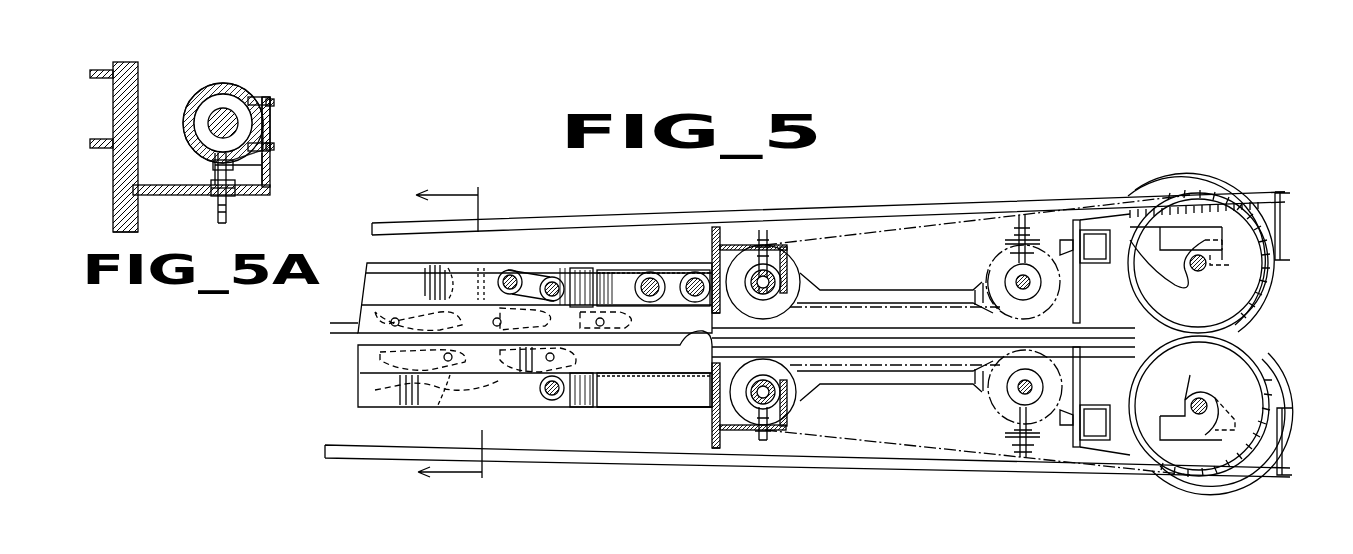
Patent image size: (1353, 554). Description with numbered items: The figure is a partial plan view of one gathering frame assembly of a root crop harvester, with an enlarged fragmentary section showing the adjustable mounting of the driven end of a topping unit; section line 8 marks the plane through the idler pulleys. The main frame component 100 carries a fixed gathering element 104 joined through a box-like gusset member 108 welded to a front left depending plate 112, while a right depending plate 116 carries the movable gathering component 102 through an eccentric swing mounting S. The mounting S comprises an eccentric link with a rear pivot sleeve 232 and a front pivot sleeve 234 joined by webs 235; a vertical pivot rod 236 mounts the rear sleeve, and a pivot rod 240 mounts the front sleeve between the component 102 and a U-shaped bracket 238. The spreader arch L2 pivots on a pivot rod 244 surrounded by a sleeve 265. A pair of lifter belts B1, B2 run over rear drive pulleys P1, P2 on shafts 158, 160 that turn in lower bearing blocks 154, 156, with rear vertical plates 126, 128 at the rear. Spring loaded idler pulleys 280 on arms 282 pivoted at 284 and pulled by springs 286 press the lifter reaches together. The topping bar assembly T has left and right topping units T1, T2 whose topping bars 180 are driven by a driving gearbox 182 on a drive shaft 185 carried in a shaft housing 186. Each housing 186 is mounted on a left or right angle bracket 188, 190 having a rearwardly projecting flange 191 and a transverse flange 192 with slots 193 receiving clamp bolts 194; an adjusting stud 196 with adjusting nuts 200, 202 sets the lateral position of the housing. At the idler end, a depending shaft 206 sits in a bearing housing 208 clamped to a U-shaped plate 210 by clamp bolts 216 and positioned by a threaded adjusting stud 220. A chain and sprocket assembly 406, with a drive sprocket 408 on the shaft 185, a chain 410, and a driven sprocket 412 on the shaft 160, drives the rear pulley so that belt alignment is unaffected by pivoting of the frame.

In FIG. 5, the section line 8- 8 is at (449, 336).
In FIG. 5, the main frame component 100 is at (677, 430).
In FIG. 5, the movable gathering component 102 is at (390, 256).
In FIG. 5, the fixed gathering element 104 is at (357, 422).
In FIG. 5A, the box-like gusset member 108 is at (96, 70).
In FIG. 5, the box-like gusset member 108 is at (607, 409).
In FIG. 5A, the front left depending plate 112 is at (128, 231).
In FIG. 5, the front left depending plate 112 is at (716, 450).
In FIG. 5, the right front depending plate 116 is at (714, 230).
In FIG. 5, the rear vertical plate 126 is at (1284, 430).
In FIG. 5, the rear vertical plate 128 is at (1282, 220).
In FIG. 5, the lower bearing block 154 is at (1199, 387).
In FIG. 5, the lower bearing block 156 is at (1208, 276).
In FIG. 5, the pulley shaft 158 is at (1192, 393).
In FIG. 5, the pulley drive shaft 160 is at (1190, 265).
In FIG. 5, the topping bars 180 is at (941, 306).
In FIG. 5, the driving gearbox 182 is at (810, 286).
In FIG. 5A, the drive shaft 185 is at (211, 122).
In FIG. 5A, the shaft housing 186 is at (208, 96).
In FIG. 5, the shaft housing 186 is at (788, 252).
In FIG. 5A, the left angle bracket 188 is at (288, 129).
In FIG. 5, the left angle bracket 188 is at (808, 416).
In FIG. 5, the right angle bracket 190 is at (806, 262).
In FIG. 5A, the rearwardly projecting flange 191 is at (145, 186).
In FIG. 5, the rearwardly projecting flange 191 is at (720, 243).
In FIG. 5A, the transverse flange 192 is at (270, 179).
In FIG. 5A, the slots 193 is at (270, 100).
In FIG. 5A, the clamp bolts 194 is at (274, 103).
In FIG. 5A, the adjusting stud 196 is at (223, 221).
In FIG. 5A, the adjusting nut 200 is at (266, 190).
In FIG. 5A, the adjusting nut 202 is at (212, 200).
In FIG. 5, the depending idler shaft 206 is at (1018, 278).
In FIG. 5, the idler shaft bearing housing 208 is at (1038, 263).
In FIG. 5, the U-shaped plate 210 is at (1074, 222).
In FIG. 5, the clamp bolts 216 is at (1090, 282).
In FIG. 5, the threaded adjusting stud 220 is at (1022, 214).
In FIG. 5, the rear pivot sleeve 232 is at (700, 270).
In FIG. 5, the front pivot sleeve 234 is at (648, 272).
In FIG. 5, the webs 235 is at (682, 264).
In FIG. 5, the vertical pivot rod 236 is at (688, 270).
In FIG. 5, the U-shaped bracket 238 is at (588, 254).
In FIG. 5, the pivot rod 240 is at (662, 270).
In FIG. 5, the pivot rod 244 is at (583, 408).
In FIG. 5, the sleeve 265 is at (542, 398).
In FIG. 5, the spring loaded idler pulleys 280 is at (449, 267).
In FIG. 5, the arm 282 is at (372, 312).
In FIG. 5, the arm pivot 284 is at (496, 318).
In FIG. 5, the spring 286 is at (368, 292).
In FIG. 5, the chain and sprocket assembly 406 is at (1232, 195).
In FIG. 5, the drive sprocket 408 is at (758, 230).
In FIG. 5, the chain 410 is at (963, 217).
In FIG. 5, the driven sprocket 412 is at (1269, 278).
In FIG. 5, the lifter belt B1 is at (904, 462).
In FIG. 5, the lifter belt B2 is at (873, 206).
In FIG. 5, the toggle spreader arch L2 is at (539, 262).
In FIG. 5, the rear lifter belt drive pulley P1 is at (1215, 352).
In FIG. 5, the rear lifter belt drive pulley P2 is at (1225, 316).
In FIG. 5, the eccentric swing mounting S is at (610, 254).
In FIG. 5, the topping bar assembly T is at (920, 278).
In FIG. 5, the left topping unit T1 is at (904, 388).
In FIG. 5, the right topping unit T2 is at (889, 280).